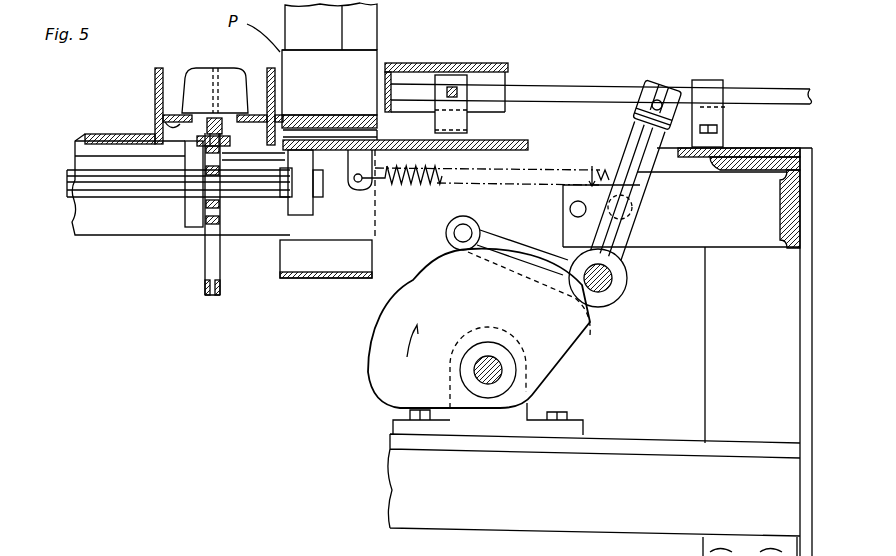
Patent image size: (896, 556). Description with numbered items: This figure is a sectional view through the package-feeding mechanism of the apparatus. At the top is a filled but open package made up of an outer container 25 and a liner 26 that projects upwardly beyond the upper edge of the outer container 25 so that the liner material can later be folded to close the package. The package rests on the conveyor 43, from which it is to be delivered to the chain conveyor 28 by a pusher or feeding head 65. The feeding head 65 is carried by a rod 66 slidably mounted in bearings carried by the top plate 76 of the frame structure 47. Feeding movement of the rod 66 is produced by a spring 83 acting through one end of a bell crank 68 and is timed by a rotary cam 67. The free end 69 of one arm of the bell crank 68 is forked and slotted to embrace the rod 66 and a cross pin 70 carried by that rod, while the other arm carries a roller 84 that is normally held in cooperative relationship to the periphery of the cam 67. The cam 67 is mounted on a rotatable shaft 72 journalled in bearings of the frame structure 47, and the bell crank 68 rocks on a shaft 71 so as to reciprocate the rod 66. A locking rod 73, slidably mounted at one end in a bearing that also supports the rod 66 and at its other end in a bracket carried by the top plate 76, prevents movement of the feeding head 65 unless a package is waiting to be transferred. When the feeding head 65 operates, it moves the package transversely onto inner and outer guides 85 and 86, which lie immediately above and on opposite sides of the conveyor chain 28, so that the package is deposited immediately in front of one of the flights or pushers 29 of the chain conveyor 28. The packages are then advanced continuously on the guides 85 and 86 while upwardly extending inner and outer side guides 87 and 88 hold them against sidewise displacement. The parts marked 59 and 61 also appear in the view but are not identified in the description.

The outer container 25 is at (377, 53).
The liner 26 is at (377, 28).
The chain conveyor 28 is at (207, 127).
The flights or pushers 29 is at (195, 70).
The conveyor 43 is at (342, 112).
The frame structure 47 is at (673, 440).
The gear 59 is at (196, 222).
The shaft 61 is at (87, 180).
The pusher 65 is at (433, 63).
The rod 66 is at (582, 92).
The rotary cam 67 is at (565, 358).
The bell crank 68 is at (622, 253).
The free end 69 is at (650, 84).
The cross pin 70 is at (665, 92).
The shaft 71 is at (610, 296).
The rotatable shaft 72 is at (497, 353).
The locking rod 73 is at (453, 90).
The top plate 76 is at (500, 143).
The spring 83 is at (437, 186).
The roller 84 is at (466, 216).
The inner guide 85 is at (235, 120).
The outer guide 86 is at (157, 127).
The inner side guide 87 is at (267, 80).
The outer side guide 88 is at (155, 97).